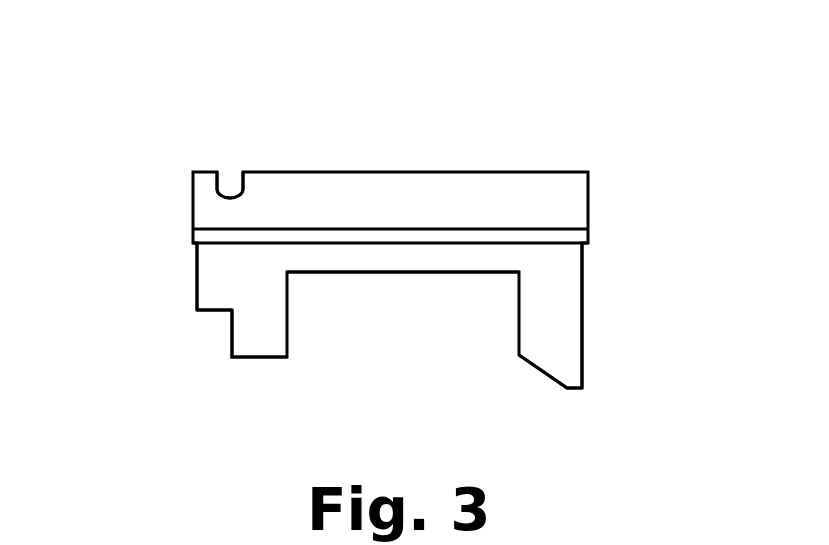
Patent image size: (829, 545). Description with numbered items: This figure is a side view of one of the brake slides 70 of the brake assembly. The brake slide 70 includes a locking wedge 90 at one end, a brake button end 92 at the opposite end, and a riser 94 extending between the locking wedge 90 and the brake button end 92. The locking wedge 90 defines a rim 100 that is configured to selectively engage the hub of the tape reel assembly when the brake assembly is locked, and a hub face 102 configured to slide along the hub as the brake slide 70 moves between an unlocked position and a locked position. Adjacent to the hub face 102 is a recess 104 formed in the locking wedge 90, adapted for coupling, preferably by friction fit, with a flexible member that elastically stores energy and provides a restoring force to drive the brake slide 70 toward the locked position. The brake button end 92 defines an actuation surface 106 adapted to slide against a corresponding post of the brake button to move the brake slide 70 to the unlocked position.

The brake slide 70 is at (160, 78).
The locking wedge 90 is at (257, 370).
The brake button end 92 is at (594, 285).
The riser 94 is at (401, 258).
The rim 100 is at (208, 313).
The hub face 102 is at (196, 272).
The recess 104 is at (225, 196).
The actuation surface 106 is at (533, 373).